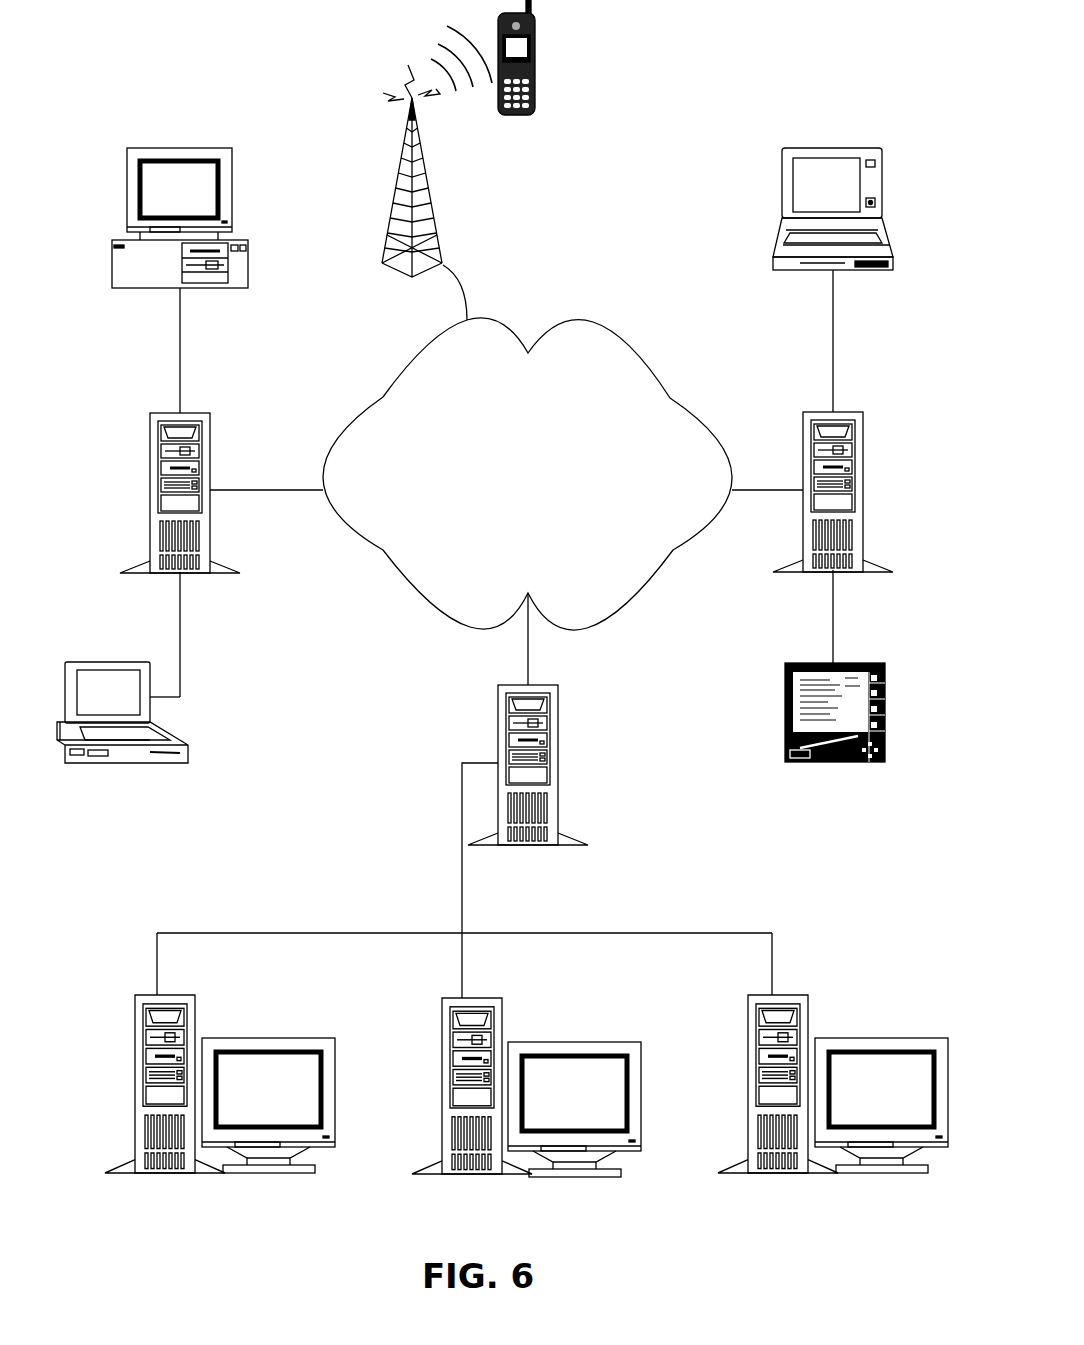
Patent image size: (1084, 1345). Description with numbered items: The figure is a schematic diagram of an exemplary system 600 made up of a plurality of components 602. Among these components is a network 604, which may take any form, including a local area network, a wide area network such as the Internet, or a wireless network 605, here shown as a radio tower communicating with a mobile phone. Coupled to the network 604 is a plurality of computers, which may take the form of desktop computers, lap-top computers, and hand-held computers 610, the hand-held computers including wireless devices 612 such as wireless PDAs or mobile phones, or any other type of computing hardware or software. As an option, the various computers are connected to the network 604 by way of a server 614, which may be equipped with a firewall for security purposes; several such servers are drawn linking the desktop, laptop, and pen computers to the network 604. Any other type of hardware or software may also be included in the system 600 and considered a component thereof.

The system 600 is at (768, 88).
The components 602 is at (357, 815).
The network 604 is at (583, 320).
The wireless network 605 is at (398, 167).
The hand-held computers 610 is at (787, 712).
The wireless devices 612 is at (534, 44).
The server 614 is at (560, 763).